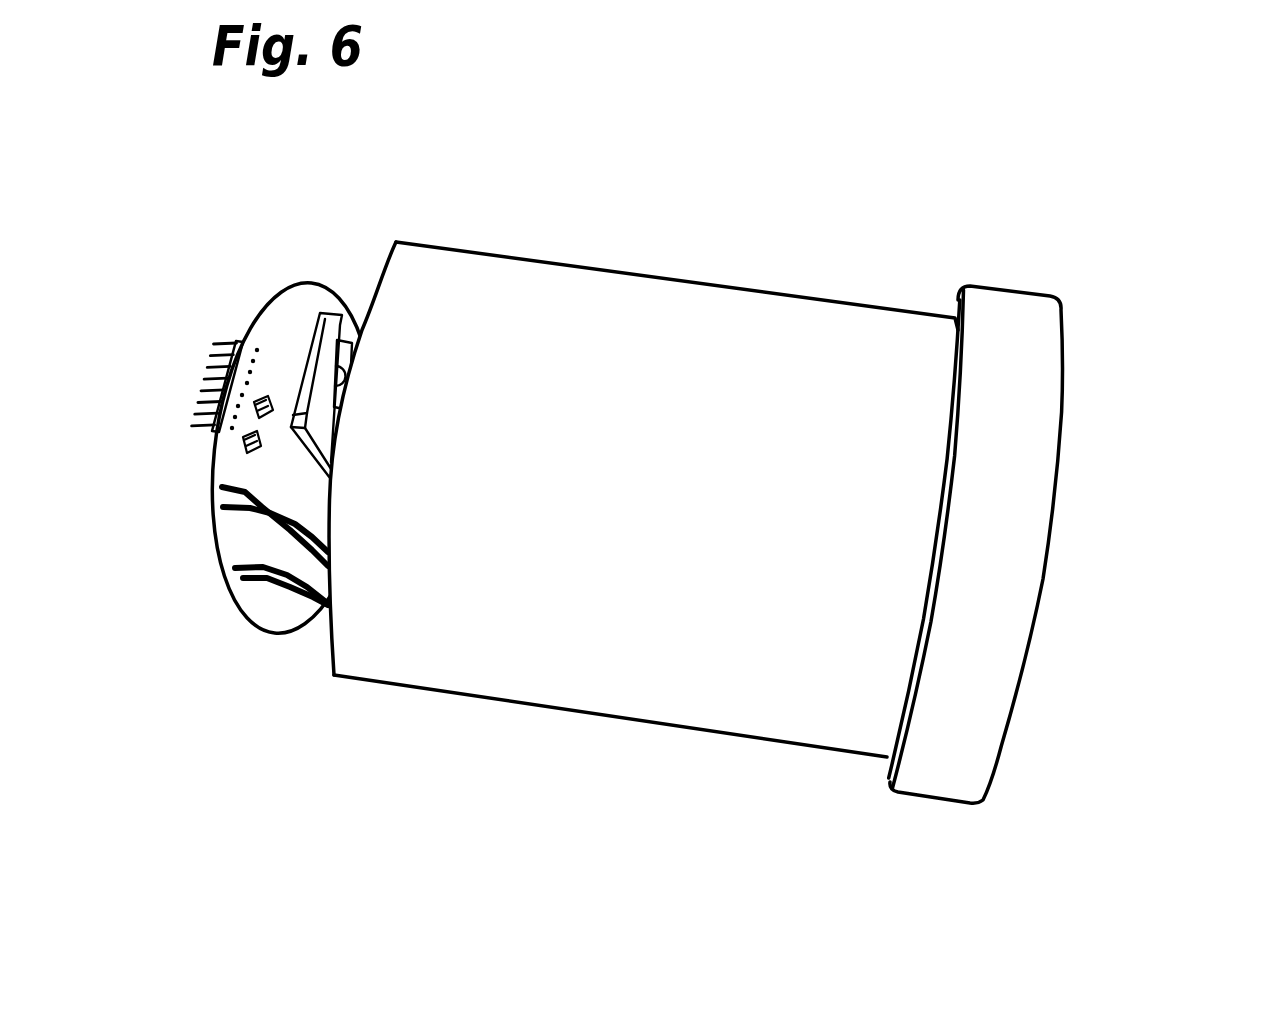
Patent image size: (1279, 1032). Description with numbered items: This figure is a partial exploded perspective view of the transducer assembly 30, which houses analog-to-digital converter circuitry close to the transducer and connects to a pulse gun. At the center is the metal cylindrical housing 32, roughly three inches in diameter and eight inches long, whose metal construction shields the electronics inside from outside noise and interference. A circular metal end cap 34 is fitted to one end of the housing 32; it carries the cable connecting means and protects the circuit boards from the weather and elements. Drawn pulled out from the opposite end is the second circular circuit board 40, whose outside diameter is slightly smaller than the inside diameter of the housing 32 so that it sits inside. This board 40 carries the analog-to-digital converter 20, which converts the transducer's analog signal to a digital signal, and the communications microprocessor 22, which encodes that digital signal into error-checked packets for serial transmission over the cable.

The transducer assembly 30 is at (874, 185).
The analog-to-digital converter 20 is at (285, 329).
The communications microprocessor 22 is at (272, 395).
The second circular circuit board 40 is at (215, 560).
The cylindrical housing 32 is at (722, 733).
The end cap 34 is at (1053, 527).